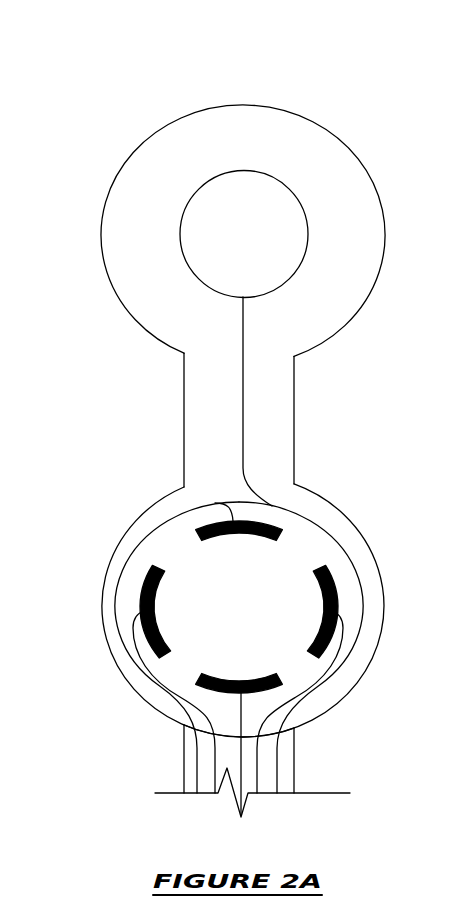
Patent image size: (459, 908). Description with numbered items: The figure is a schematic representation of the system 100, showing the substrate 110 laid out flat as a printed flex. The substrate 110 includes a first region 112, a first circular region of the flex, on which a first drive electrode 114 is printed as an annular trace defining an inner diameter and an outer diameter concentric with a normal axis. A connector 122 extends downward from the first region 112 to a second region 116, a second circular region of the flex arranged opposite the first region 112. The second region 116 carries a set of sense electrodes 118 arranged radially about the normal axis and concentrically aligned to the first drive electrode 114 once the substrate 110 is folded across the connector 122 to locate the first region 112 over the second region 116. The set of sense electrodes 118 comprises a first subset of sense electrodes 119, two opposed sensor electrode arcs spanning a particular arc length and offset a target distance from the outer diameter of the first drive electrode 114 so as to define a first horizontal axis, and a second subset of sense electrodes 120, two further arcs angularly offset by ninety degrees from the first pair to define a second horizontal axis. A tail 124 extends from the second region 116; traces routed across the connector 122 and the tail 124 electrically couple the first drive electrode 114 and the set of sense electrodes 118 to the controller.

The system 100 is at (141, 69).
The substrate 110 is at (208, 230).
The first region 112 is at (122, 241).
The first drive electrode 114 is at (243, 170).
The second region 116 is at (217, 545).
The set of sense electrodes 118 is at (310, 550).
The first subset of sense electrodes 119 is at (258, 538).
The second subset of sense electrodes 120 is at (149, 578).
The connector 122 is at (207, 429).
The tail 124 is at (192, 774).